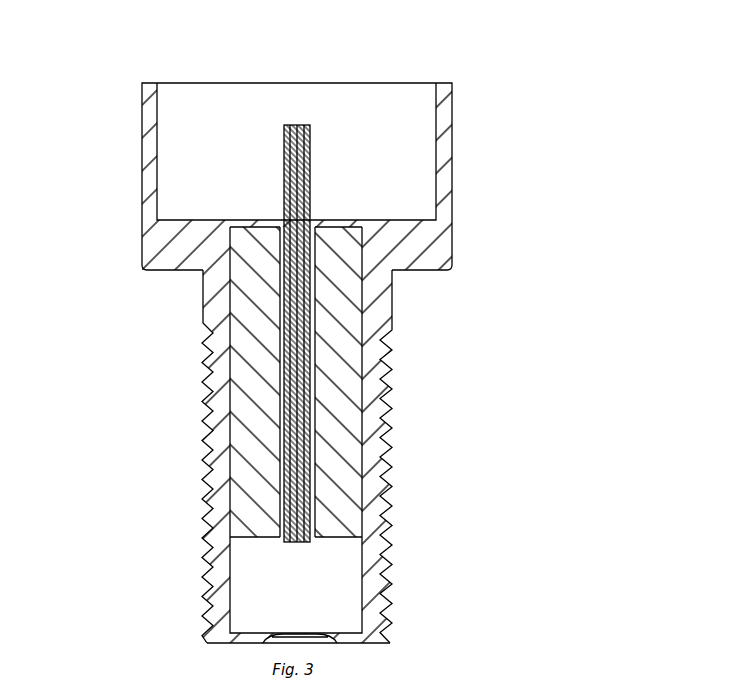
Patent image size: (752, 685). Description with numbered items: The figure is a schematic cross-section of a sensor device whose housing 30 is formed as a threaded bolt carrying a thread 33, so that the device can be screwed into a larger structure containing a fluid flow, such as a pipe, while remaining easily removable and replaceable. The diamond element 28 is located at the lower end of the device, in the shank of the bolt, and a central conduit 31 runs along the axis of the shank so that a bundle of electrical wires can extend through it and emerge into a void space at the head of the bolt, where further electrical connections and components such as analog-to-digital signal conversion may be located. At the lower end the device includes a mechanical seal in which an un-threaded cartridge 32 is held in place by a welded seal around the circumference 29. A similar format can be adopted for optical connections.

The diamond element 28 is at (300, 123).
The welded seal around the circumference 29 is at (230, 228).
The housing 30 is at (412, 250).
The bore 31 is at (308, 362).
The un-threaded cartridge 32 is at (337, 428).
The thread 33 is at (205, 453).